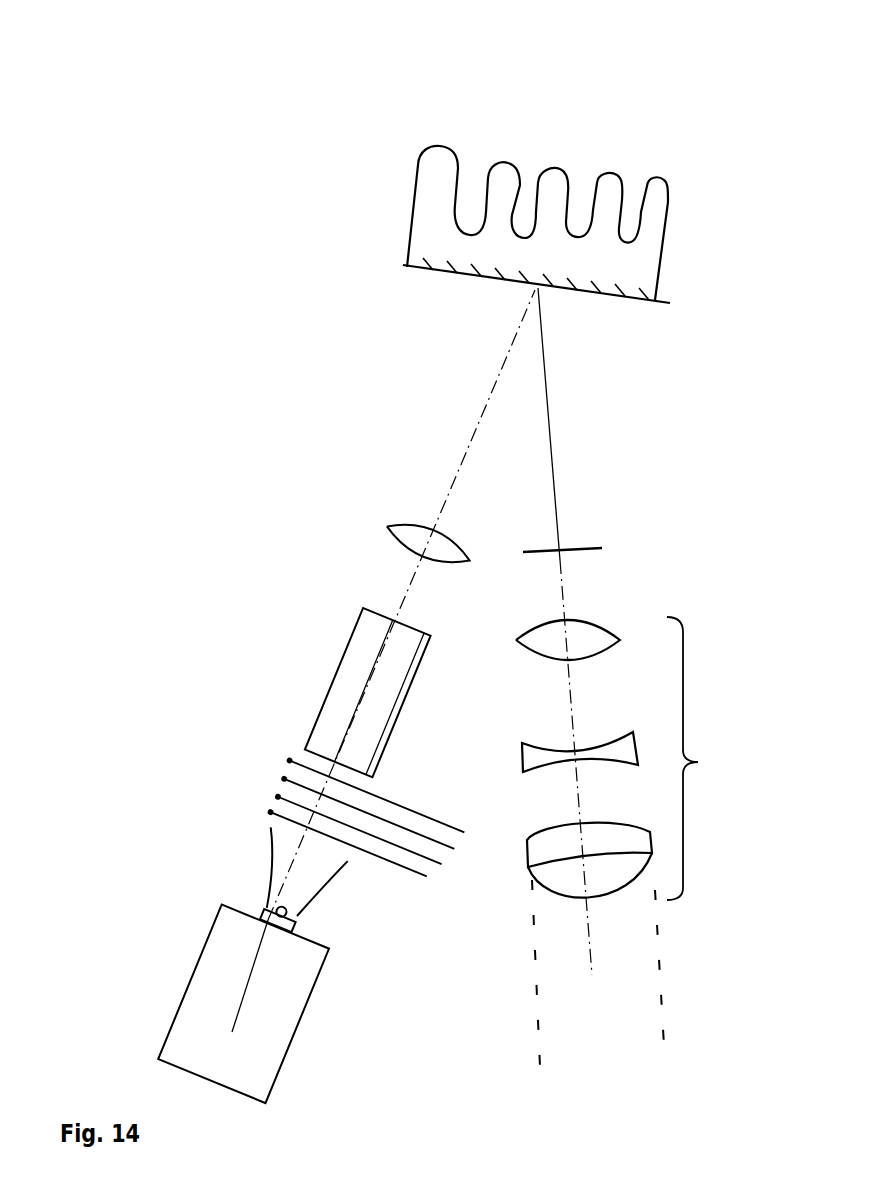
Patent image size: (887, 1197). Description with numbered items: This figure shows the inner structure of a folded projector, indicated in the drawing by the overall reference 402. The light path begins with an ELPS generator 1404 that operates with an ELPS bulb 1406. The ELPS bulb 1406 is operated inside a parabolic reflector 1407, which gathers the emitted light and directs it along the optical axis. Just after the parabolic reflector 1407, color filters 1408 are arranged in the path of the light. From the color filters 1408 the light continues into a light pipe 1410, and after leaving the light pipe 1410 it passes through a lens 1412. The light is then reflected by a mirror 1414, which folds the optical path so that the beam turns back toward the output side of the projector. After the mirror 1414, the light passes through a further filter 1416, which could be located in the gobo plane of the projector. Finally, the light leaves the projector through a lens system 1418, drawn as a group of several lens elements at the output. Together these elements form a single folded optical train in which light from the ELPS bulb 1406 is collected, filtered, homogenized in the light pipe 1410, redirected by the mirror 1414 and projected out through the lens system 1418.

The optical system 402 is at (278, 128).
The ELPS generator 1404 is at (208, 942).
The ELPS bulb 1406 is at (270, 908).
The parabolic reflector 1407 is at (268, 905).
The color filters 1408 is at (274, 758).
The light pipe 1410 is at (340, 668).
The lens 1412 is at (387, 525).
The mirror 1414 is at (613, 297).
The filter 1416 is at (590, 547).
The lens system 1418 is at (640, 758).